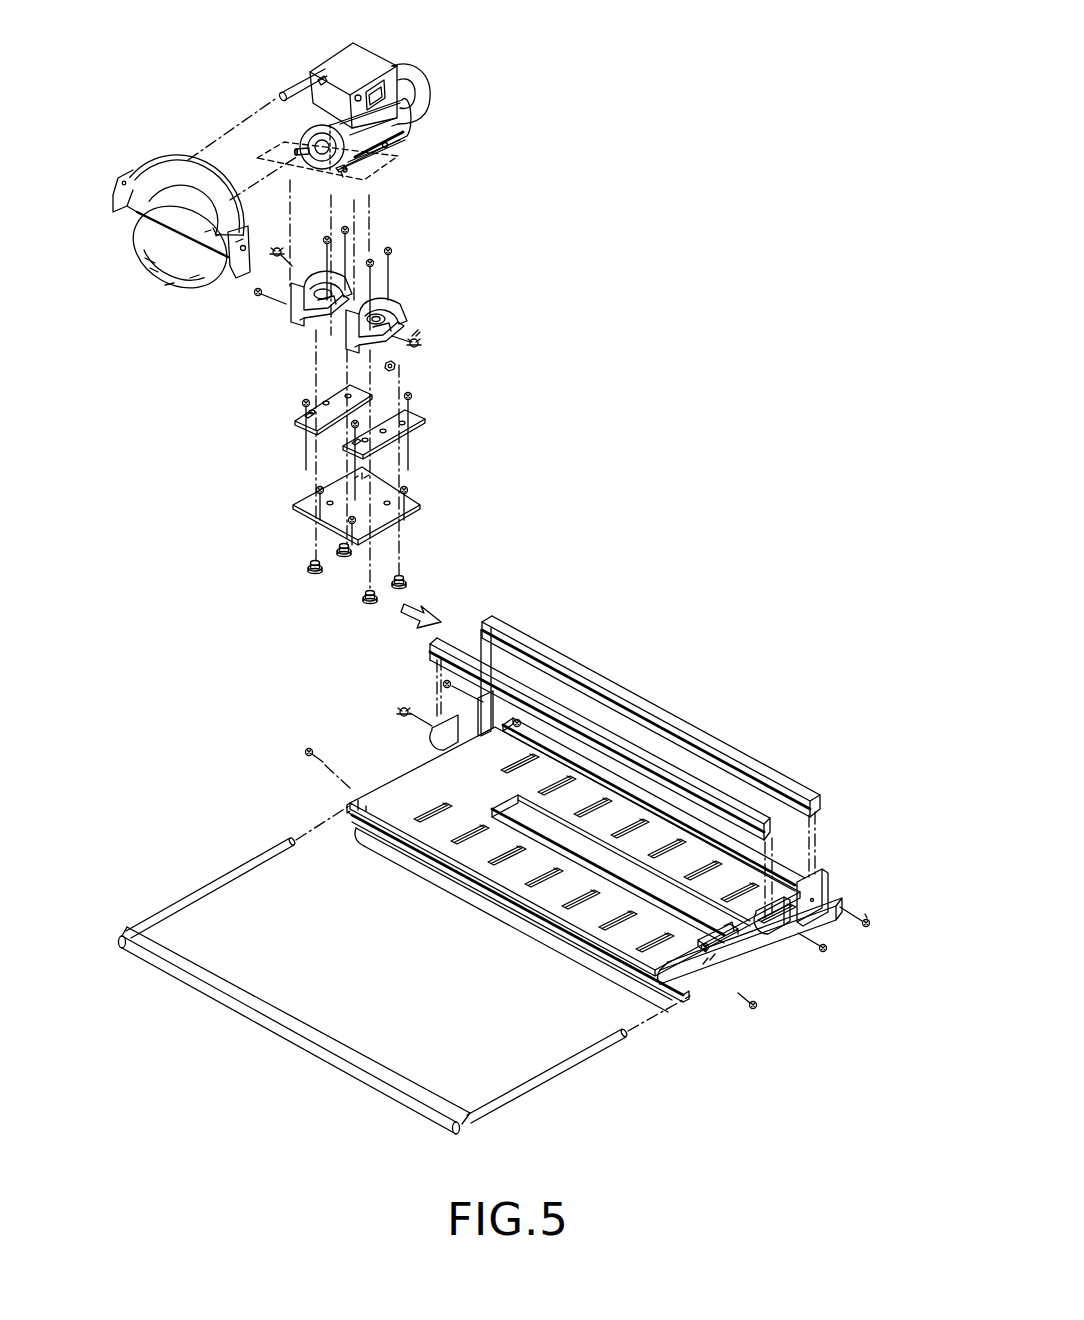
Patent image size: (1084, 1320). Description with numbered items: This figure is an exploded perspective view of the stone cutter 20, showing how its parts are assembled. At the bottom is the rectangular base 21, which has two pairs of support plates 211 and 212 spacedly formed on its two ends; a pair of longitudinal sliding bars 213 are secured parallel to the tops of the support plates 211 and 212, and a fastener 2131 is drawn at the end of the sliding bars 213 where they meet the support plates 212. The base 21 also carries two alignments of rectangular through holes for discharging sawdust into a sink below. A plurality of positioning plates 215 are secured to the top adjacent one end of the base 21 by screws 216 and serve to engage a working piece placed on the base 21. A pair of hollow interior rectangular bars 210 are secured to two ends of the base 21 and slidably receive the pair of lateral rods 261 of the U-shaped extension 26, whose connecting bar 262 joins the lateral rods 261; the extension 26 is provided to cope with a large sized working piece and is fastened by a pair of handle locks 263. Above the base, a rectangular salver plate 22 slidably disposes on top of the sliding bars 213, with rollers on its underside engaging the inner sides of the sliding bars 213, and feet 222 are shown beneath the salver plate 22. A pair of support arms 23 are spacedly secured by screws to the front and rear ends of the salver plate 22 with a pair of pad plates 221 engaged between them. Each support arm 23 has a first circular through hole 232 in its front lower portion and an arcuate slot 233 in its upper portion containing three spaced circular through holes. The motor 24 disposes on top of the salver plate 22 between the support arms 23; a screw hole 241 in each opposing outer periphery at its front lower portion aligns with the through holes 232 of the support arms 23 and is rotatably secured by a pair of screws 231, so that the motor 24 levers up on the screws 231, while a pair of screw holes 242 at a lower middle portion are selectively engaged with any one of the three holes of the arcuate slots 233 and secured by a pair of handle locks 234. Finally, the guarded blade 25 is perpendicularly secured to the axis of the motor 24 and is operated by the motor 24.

The stone cutter 20 is at (610, 899).
The rectangular base 21 is at (517, 873).
The hollow interior rectangular bars 210 is at (743, 957).
The support plates 211 is at (771, 930).
The support plates 212 is at (820, 887).
The fastening bolt 2131 is at (865, 918).
The longitudinal sliding bars 213 is at (773, 780).
The positioning plates 215 is at (690, 960).
The screws 216 is at (692, 950).
The rectangular salver plate 22 is at (422, 505).
The pad plates 221 is at (420, 418).
The rubber feet 222 is at (408, 580).
The support arms 23 is at (390, 313).
The screws 231 is at (394, 367).
The first circular through hole 232 is at (352, 348).
The arcuate slot 233 is at (376, 312).
The handle locks 234 is at (420, 343).
The motor 24 is at (360, 65).
The screw hole 241 is at (345, 172).
The screw holes 242 is at (385, 145).
The guarded blade 25 is at (172, 253).
The U-shaped extension 26 is at (405, 987).
The lateral rods 261 is at (508, 1098).
The frame bar 262 is at (237, 993).
The handle locks 263 is at (760, 1008).